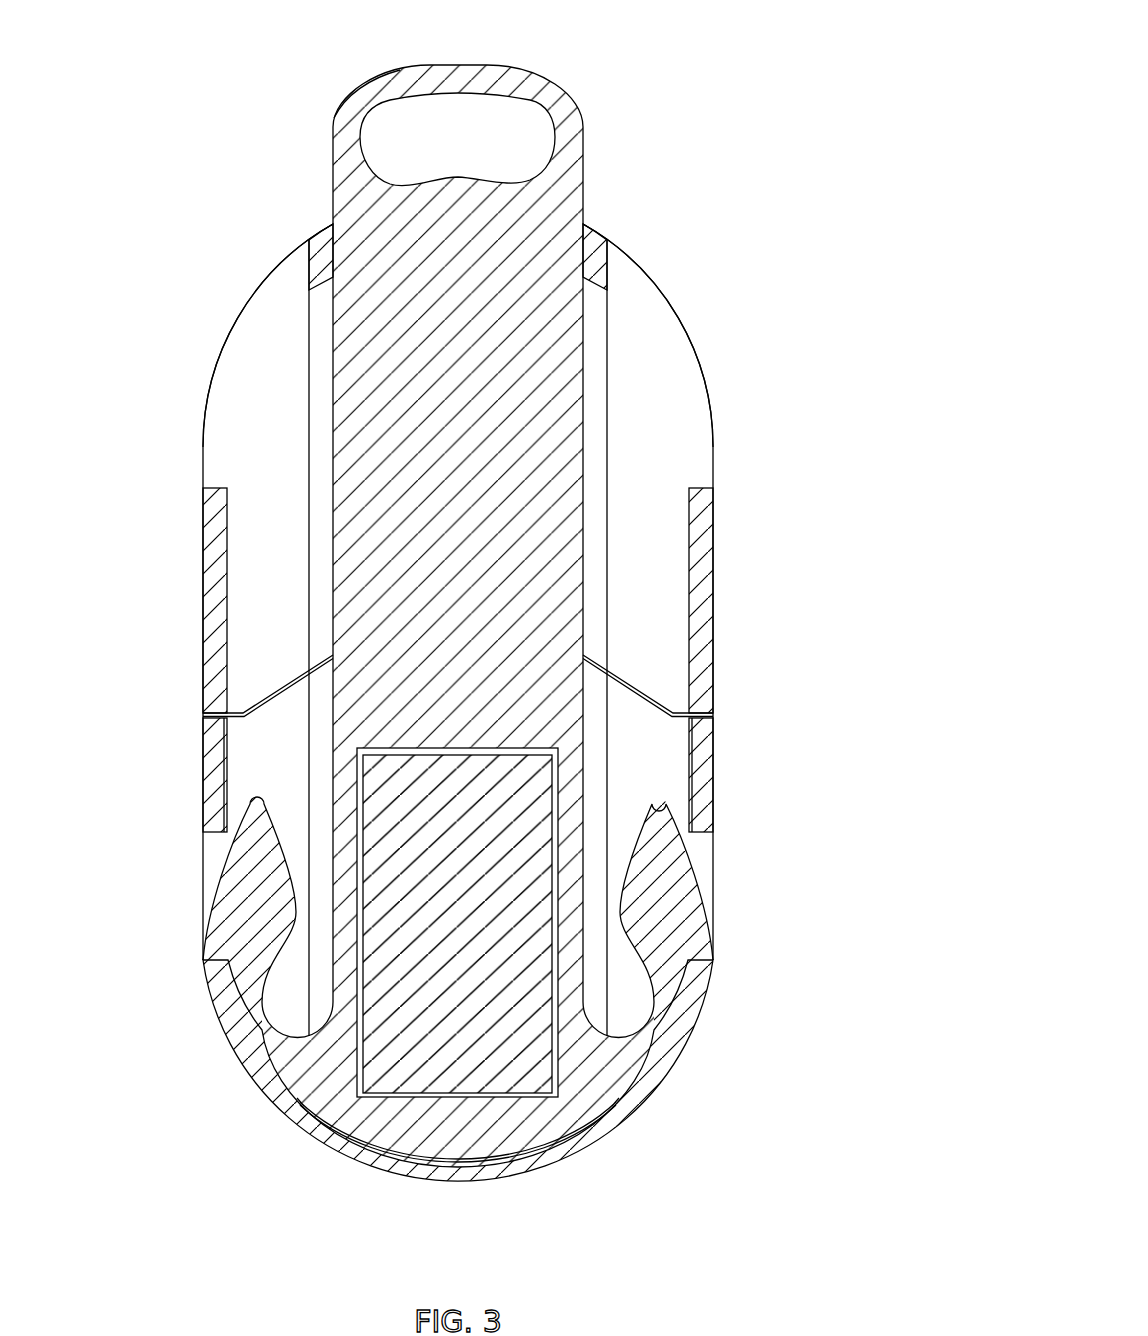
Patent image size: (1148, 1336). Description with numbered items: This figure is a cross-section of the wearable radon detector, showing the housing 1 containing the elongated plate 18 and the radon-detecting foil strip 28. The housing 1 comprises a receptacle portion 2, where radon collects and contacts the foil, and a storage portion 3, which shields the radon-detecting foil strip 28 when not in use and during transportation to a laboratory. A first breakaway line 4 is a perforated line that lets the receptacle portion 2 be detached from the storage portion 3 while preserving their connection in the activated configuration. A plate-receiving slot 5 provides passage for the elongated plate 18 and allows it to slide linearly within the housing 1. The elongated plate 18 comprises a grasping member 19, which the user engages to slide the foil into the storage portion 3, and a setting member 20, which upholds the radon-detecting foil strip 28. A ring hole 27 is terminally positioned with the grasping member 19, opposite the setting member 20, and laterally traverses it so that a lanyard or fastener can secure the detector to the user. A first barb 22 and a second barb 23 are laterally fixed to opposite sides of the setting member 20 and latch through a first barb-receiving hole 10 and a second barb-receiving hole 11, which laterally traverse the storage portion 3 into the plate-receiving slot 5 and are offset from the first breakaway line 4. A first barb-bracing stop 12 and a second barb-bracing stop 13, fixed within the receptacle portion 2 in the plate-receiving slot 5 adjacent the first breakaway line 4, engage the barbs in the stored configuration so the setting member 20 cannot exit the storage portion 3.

The housing 1 is at (762, 683).
The receptacle portion 2 is at (705, 877).
The storage portion 3 is at (700, 390).
The first breakaway line 4 is at (593, 657).
The plate-receiving slot 5 is at (602, 348).
The first barb-receiving hole 10 is at (267, 282).
The second barb-receiving hole 11 is at (650, 280).
The first barb-bracing stop 12 is at (210, 488).
The second barb-bracing stop 13 is at (703, 488).
The elongated plate 18 is at (612, 177).
The grasping member 19 is at (443, 424).
The setting member 20 is at (443, 731).
The first barb 22 is at (233, 925).
The second barb 23 is at (653, 925).
The ring hole 27 is at (504, 95).
The radon-detecting foil strip 28 is at (443, 940).